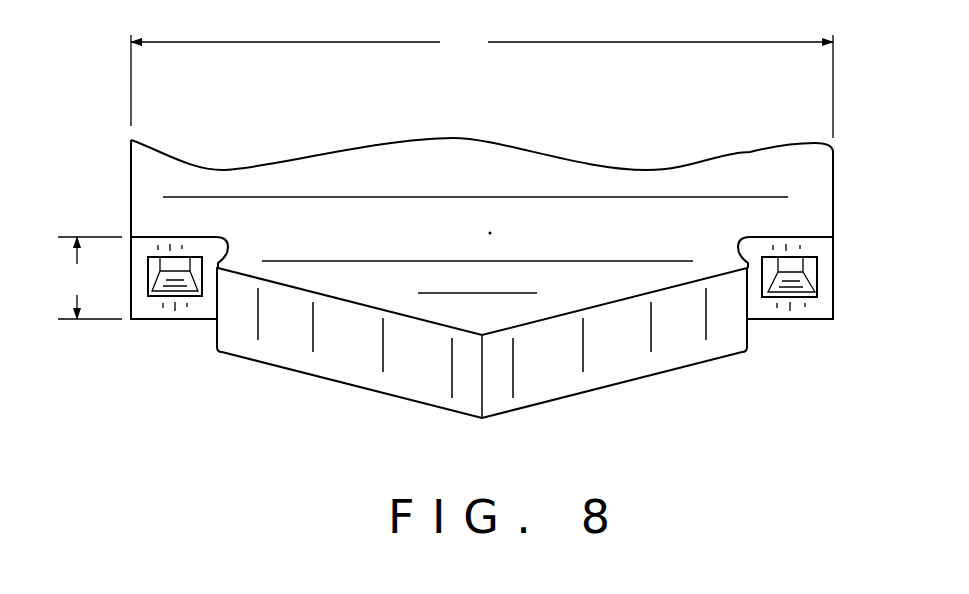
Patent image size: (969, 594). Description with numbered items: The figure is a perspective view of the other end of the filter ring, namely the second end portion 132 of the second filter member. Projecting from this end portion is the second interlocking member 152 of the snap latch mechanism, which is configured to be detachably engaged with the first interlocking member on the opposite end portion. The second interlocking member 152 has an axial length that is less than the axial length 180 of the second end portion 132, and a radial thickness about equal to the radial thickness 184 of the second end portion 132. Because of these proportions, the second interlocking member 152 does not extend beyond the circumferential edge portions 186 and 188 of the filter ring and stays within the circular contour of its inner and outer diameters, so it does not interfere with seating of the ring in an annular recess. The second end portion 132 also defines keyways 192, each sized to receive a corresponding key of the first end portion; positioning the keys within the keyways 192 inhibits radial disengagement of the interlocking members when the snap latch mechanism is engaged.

The end portion of the second filter member 132 is at (112, 157).
The second interlocking member 152 is at (338, 362).
The axial length of the second end portion 180 is at (482, 84).
The radial thickness of the second end portion 184 is at (87, 278).
The circumferential edge portion 186 is at (131, 203).
The circumferential edge portion 188 is at (833, 209).
The keyway 192 is at (168, 298).